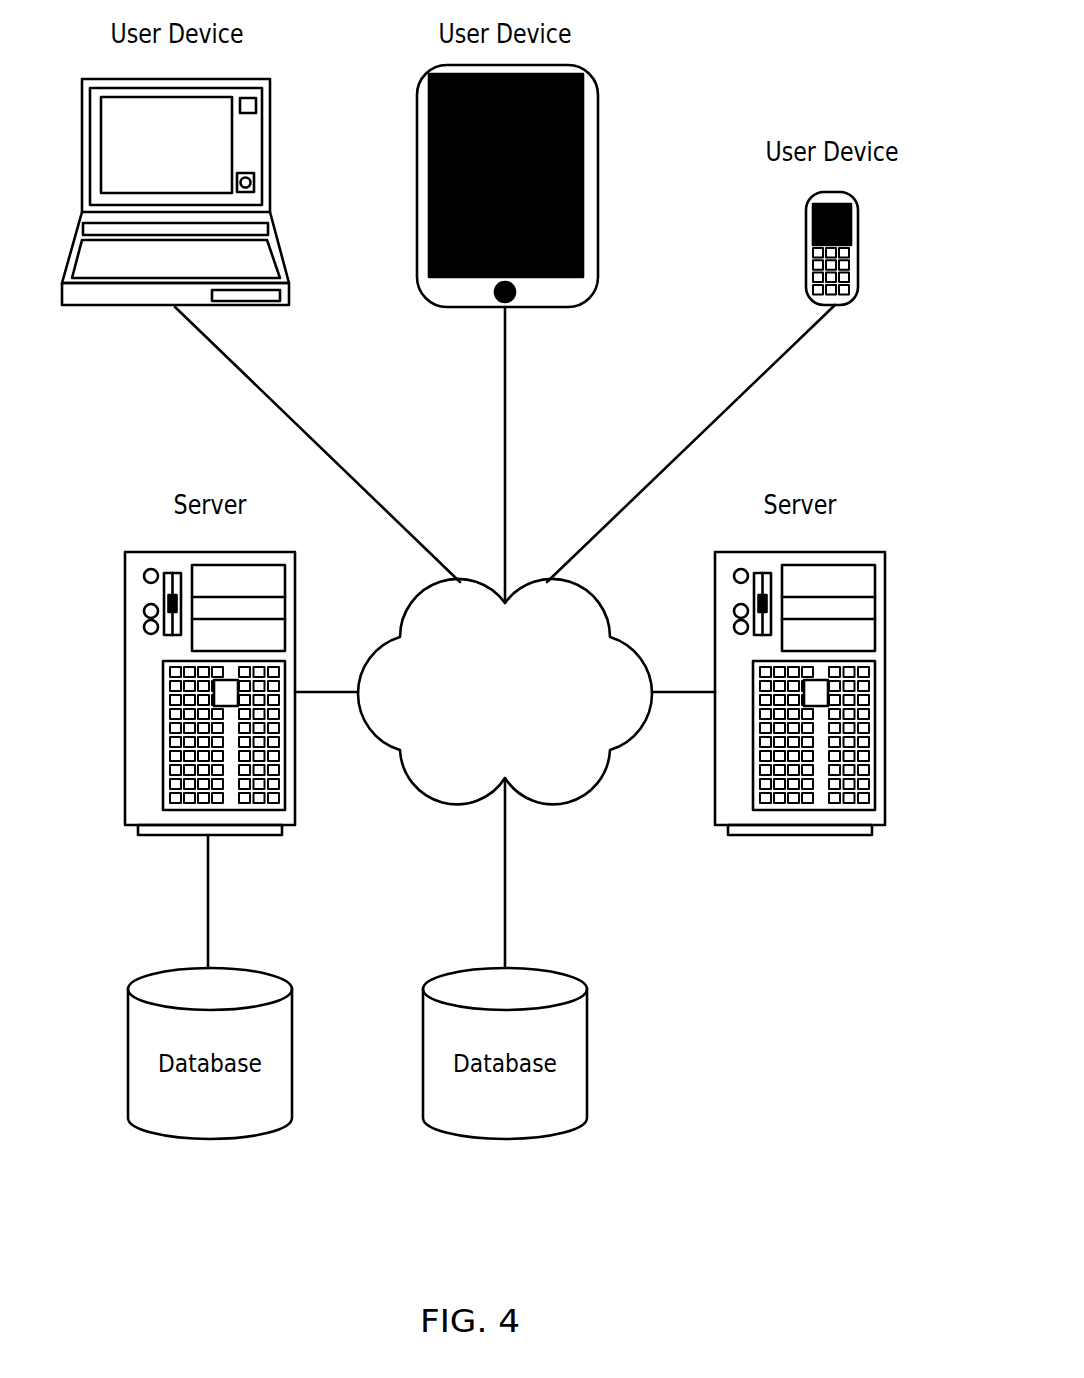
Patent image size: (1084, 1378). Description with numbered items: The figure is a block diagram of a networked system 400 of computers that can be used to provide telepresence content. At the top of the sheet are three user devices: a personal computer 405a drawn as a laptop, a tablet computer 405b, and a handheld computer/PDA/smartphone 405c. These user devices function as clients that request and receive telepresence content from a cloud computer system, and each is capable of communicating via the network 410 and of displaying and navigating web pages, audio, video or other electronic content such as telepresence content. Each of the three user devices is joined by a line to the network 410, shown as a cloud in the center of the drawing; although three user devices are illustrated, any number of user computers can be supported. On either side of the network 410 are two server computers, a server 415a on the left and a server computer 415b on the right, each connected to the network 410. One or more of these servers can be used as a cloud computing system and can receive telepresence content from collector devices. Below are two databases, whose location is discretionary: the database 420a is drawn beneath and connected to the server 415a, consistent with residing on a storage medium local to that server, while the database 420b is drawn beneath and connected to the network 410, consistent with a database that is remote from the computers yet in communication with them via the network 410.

The system 400 is at (782, 1192).
The personal computer 405a is at (270, 95).
The tablet computer 405b is at (415, 250).
The handheld computer/PDA/smartphone 405c is at (806, 248).
The network 410 is at (545, 806).
The server 415a is at (125, 692).
The server computer 415b is at (885, 692).
The database 420a is at (210, 1139).
The database 420b is at (505, 1139).